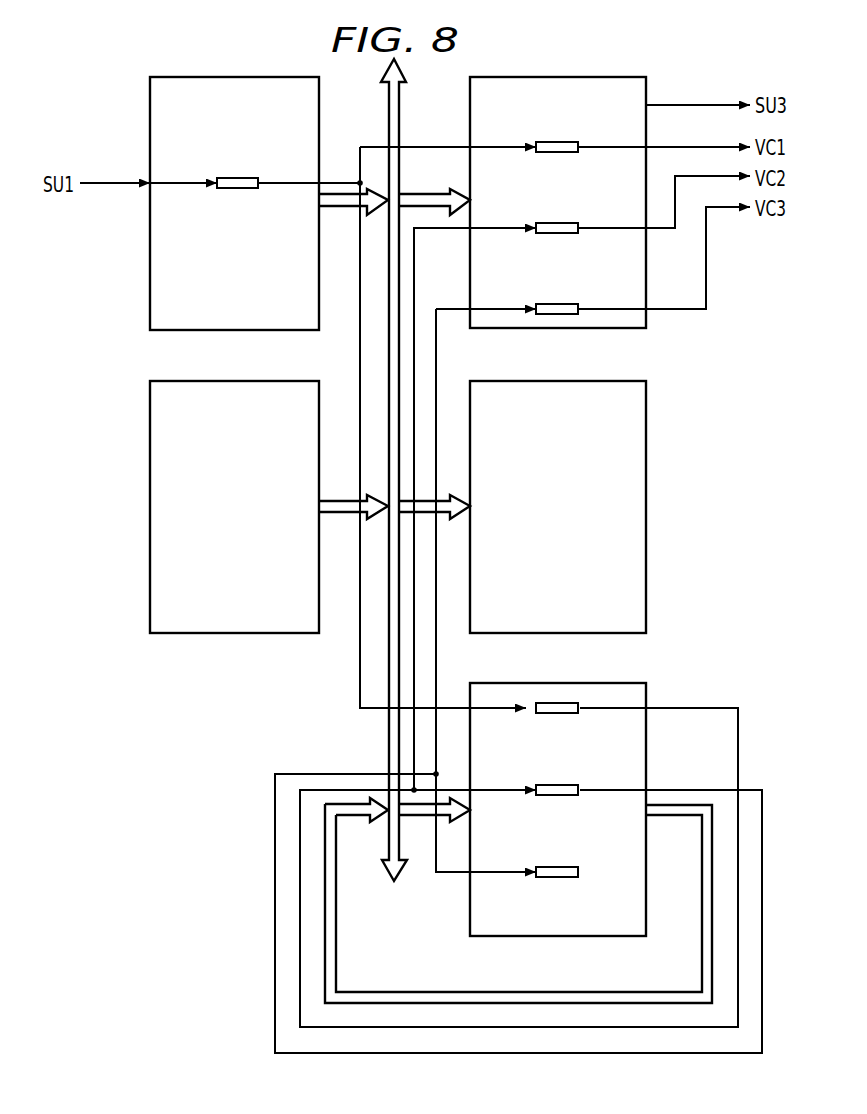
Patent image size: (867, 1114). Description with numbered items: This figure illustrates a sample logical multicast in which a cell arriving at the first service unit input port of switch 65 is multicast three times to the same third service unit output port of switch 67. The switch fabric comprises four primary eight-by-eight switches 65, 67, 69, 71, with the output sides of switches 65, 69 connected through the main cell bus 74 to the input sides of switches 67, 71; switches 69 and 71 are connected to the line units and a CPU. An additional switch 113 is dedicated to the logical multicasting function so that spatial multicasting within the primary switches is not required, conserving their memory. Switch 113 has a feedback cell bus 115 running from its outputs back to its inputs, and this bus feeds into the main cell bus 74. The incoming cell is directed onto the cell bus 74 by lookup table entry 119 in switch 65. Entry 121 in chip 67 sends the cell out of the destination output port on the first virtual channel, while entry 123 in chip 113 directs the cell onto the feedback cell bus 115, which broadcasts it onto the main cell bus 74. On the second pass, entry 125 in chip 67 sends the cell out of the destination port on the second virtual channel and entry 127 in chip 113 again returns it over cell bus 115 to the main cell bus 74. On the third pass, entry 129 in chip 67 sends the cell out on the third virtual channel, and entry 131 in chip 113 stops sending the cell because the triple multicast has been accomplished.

The switch 65 is at (243, 77).
The switch 67 is at (555, 77).
The switch 69 is at (226, 518).
The switch 71 is at (547, 518).
The cell bus 74 is at (388, 729).
The switch 113 is at (647, 748).
The feedback cell bus 115 is at (445, 991).
The lookup table entry 119 is at (240, 178).
The lookup table entry 121 is at (555, 142).
The lookup table entry 123 is at (560, 713).
The lookup table entry 125 is at (555, 223).
The lookup table entry 127 is at (560, 795).
The lookup table entry 129 is at (555, 304).
The lookup table entry 131 is at (560, 877).